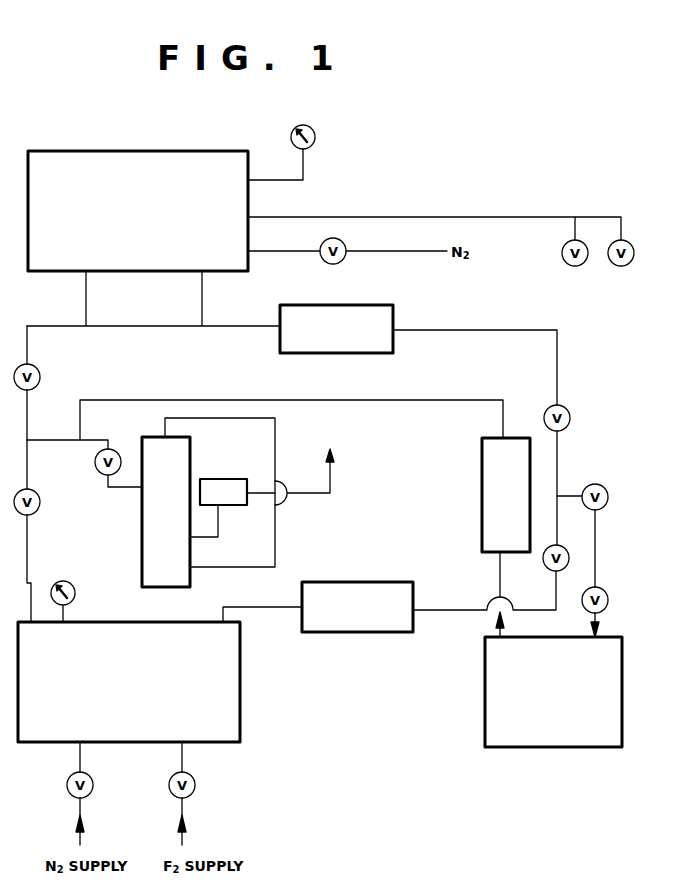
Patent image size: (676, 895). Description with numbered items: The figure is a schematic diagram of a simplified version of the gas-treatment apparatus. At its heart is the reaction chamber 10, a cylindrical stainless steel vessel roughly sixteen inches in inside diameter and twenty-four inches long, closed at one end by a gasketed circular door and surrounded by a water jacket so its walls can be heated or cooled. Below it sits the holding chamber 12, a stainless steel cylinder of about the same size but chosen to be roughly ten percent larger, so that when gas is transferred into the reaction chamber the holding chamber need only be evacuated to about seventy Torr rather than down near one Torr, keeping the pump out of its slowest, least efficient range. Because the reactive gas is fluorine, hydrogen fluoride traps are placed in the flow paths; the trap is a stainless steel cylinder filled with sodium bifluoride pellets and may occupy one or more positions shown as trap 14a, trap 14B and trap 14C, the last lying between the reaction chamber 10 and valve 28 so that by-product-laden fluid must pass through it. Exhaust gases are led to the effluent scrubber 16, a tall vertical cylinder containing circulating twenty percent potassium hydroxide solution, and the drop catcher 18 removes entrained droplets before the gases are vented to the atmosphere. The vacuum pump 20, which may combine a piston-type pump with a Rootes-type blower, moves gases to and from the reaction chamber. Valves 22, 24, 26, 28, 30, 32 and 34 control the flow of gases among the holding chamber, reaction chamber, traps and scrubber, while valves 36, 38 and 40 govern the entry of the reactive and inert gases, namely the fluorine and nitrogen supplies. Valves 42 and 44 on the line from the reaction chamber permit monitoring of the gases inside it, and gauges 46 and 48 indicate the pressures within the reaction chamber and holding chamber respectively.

The reaction chamber 10 is at (188, 151).
The holding chamber 12 is at (240, 706).
The hydrogen fluoride trap 14a is at (375, 632).
The hydrogen fluoride trap 14B is at (482, 515).
The hydrogen fluoride trap 14C is at (380, 353).
The effluent scrubber 16 is at (142, 538).
The drop catcher 18 is at (222, 479).
The vacuum pump 20 is at (485, 712).
The valve 22 is at (50, 378).
The valve 24 is at (46, 526).
The valve 26 is at (95, 462).
The valve 28 is at (567, 413).
The valve 30 is at (568, 557).
The valve 32 is at (608, 500).
The valve 34 is at (618, 604).
The valve 36 is at (93, 785).
The valve 38 is at (195, 782).
The valve 40 is at (330, 264).
The monitoring valve 42 is at (578, 266).
The monitoring valve 44 is at (618, 266).
The gauge 46 is at (315, 134).
The gauge 48 is at (73, 585).